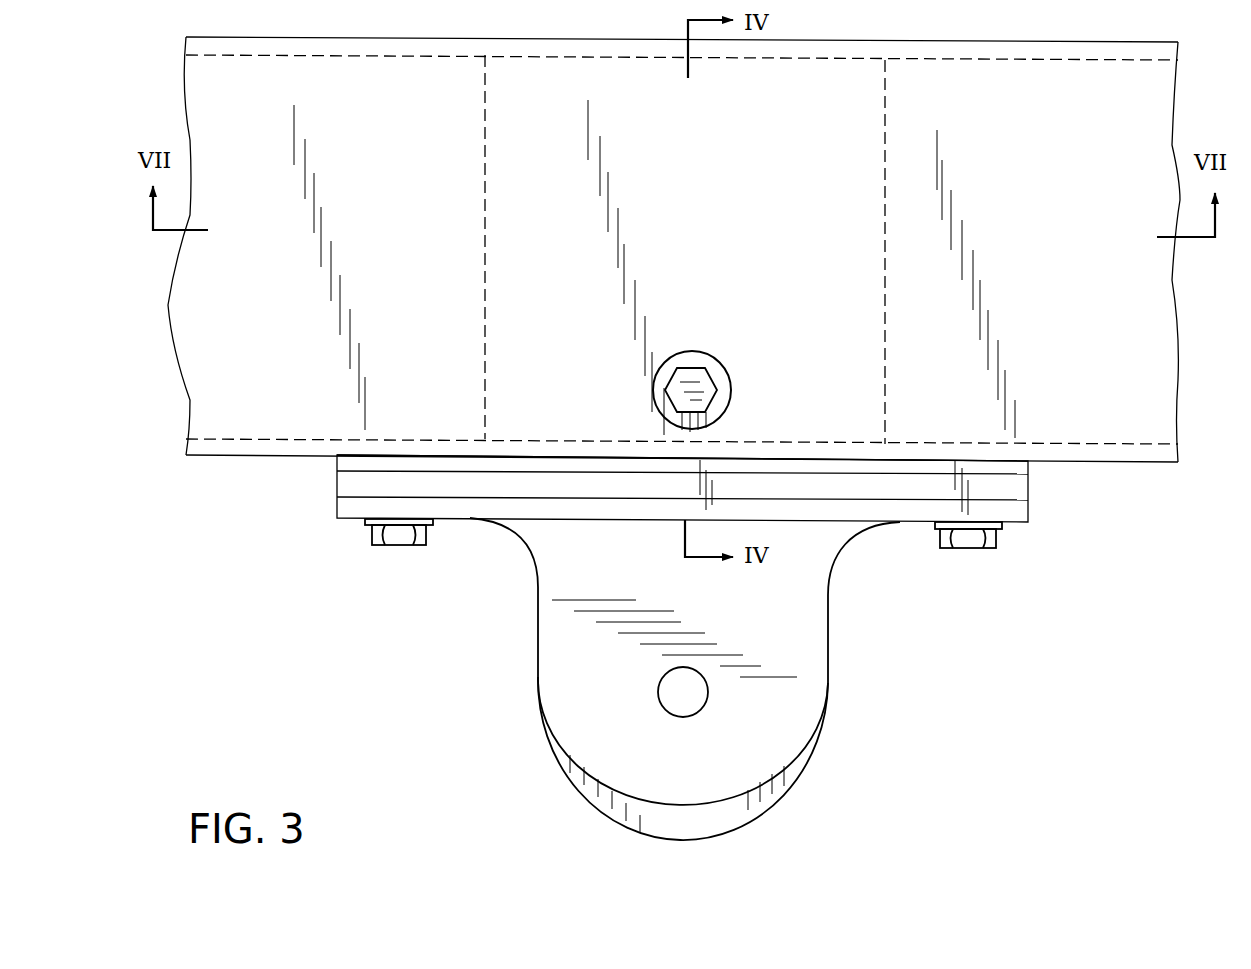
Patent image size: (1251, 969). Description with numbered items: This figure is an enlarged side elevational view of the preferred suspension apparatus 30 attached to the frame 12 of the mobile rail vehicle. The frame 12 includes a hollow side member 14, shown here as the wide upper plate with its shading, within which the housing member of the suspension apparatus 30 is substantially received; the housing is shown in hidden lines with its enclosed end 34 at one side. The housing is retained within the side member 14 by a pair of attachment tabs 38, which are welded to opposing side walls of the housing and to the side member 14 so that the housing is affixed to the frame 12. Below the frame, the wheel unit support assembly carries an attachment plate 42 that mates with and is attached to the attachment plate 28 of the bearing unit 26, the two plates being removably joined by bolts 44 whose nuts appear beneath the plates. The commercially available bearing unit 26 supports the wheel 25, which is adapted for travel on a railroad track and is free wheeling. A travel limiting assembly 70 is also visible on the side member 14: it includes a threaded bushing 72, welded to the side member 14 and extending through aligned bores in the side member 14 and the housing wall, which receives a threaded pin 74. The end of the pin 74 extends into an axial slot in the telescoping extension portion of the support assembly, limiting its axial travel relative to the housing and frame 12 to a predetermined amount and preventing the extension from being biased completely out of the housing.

The frame 12 is at (865, 37).
The hollow side member 14 is at (1068, 215).
The wheel 25 is at (792, 775).
The bearing unit 26 is at (748, 627).
The attachment plate 28 is at (1030, 512).
The suspension apparatus 30 is at (889, 113).
The enclosed end 34 is at (527, 68).
The attachment tabs 38 is at (337, 462).
The attachment plate 42 is at (1030, 488).
The bolts 44 is at (400, 540).
The travel limiting assembly 70 is at (720, 350).
The threaded bushing 72 is at (662, 372).
The threaded pin 74 is at (710, 393).